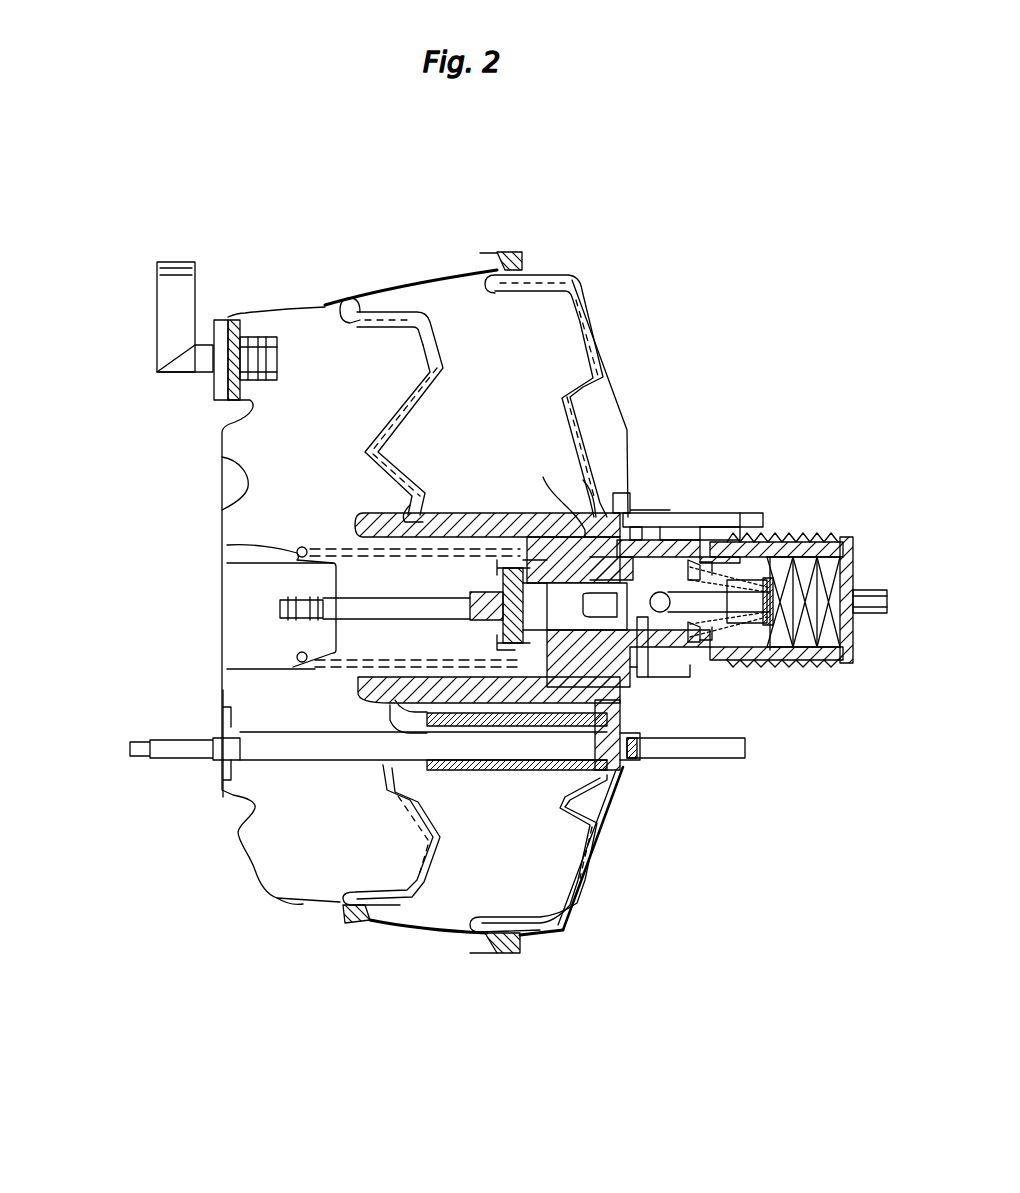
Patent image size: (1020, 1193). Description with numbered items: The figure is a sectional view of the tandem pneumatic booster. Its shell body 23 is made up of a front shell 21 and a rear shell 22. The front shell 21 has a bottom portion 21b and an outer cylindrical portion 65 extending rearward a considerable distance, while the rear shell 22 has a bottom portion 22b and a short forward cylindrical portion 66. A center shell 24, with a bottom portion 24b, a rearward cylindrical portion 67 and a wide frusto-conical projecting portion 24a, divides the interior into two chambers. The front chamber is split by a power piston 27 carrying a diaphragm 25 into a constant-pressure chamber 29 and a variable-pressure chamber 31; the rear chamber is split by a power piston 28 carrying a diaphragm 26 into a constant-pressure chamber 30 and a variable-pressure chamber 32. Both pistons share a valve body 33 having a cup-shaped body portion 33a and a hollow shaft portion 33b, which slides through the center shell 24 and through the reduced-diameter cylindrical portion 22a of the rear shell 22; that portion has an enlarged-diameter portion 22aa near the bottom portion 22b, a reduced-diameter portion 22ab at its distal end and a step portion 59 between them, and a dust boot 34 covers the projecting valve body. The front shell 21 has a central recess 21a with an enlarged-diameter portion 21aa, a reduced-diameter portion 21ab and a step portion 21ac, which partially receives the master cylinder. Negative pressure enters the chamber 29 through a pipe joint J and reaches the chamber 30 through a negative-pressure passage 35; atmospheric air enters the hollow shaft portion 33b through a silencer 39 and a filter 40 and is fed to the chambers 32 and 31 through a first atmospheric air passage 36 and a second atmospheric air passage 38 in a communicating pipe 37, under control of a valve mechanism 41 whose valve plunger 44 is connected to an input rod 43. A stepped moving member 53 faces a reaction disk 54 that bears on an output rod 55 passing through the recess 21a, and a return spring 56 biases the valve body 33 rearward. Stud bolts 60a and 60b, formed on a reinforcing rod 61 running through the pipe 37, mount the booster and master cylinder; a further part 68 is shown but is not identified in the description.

The pipe joint J is at (193, 367).
The front shell 21 is at (242, 870).
The recess 21a is at (273, 667).
The enlarged-diameter portion 21aa is at (227, 667).
The reduced-diameter portion 21ab is at (317, 657).
The step portion 21ac is at (227, 547).
The bottom portion 21b is at (222, 440).
The rear shell 22 is at (597, 884).
The reduced-diameter cylindrical portion 22a is at (687, 513).
The enlarged-diameter portion 22aa is at (668, 513).
The reduced-diameter portion 22ab is at (740, 513).
The bottom portion 22b is at (603, 375).
The shell body 23 is at (268, 327).
The center shell 24 is at (420, 308).
The projecting portion 24a is at (392, 300).
The bottom portion 24b is at (345, 298).
The diaphragm 25 is at (363, 328).
The diaphragm 26 is at (520, 292).
The power piston 27 is at (378, 430).
The power piston 28 is at (562, 408).
The constant-pressure chamber 29 is at (333, 865).
The constant-pressure chamber 30 is at (520, 875).
The variable-pressure chamber 31 is at (385, 923).
The variable-pressure chamber 32 is at (560, 925).
The valve body 33 is at (358, 523).
The body portion 33a is at (385, 737).
The hollow shaft portion 33b is at (797, 667).
The dust boot 34 is at (793, 533).
The negative-pressure passage 35 is at (543, 477).
The first atmospheric air passage 36 is at (660, 653).
The communicating pipe 37 is at (533, 770).
The second atmospheric air passage 38 is at (625, 768).
The silencer 39 is at (823, 557).
The filter 40 is at (830, 662).
The valve mechanism 41 is at (757, 513).
The input rod 43 is at (870, 593).
The valve plunger 44 is at (650, 503).
The stepped moving member 53 is at (510, 560).
The reaction disk 54 is at (507, 690).
The output rod 55 is at (257, 610).
The return spring 56 is at (348, 670).
The step portion 59 is at (675, 740).
The stud bolts 60a is at (735, 755).
The stud bolts 60b is at (177, 750).
The reinforcing rod 61 is at (282, 755).
The cylindrical portion 65 is at (303, 907).
The cylindrical portion 66 is at (567, 275).
The cylindrical portion 67 is at (458, 940).
The top clamp 68 is at (510, 252).